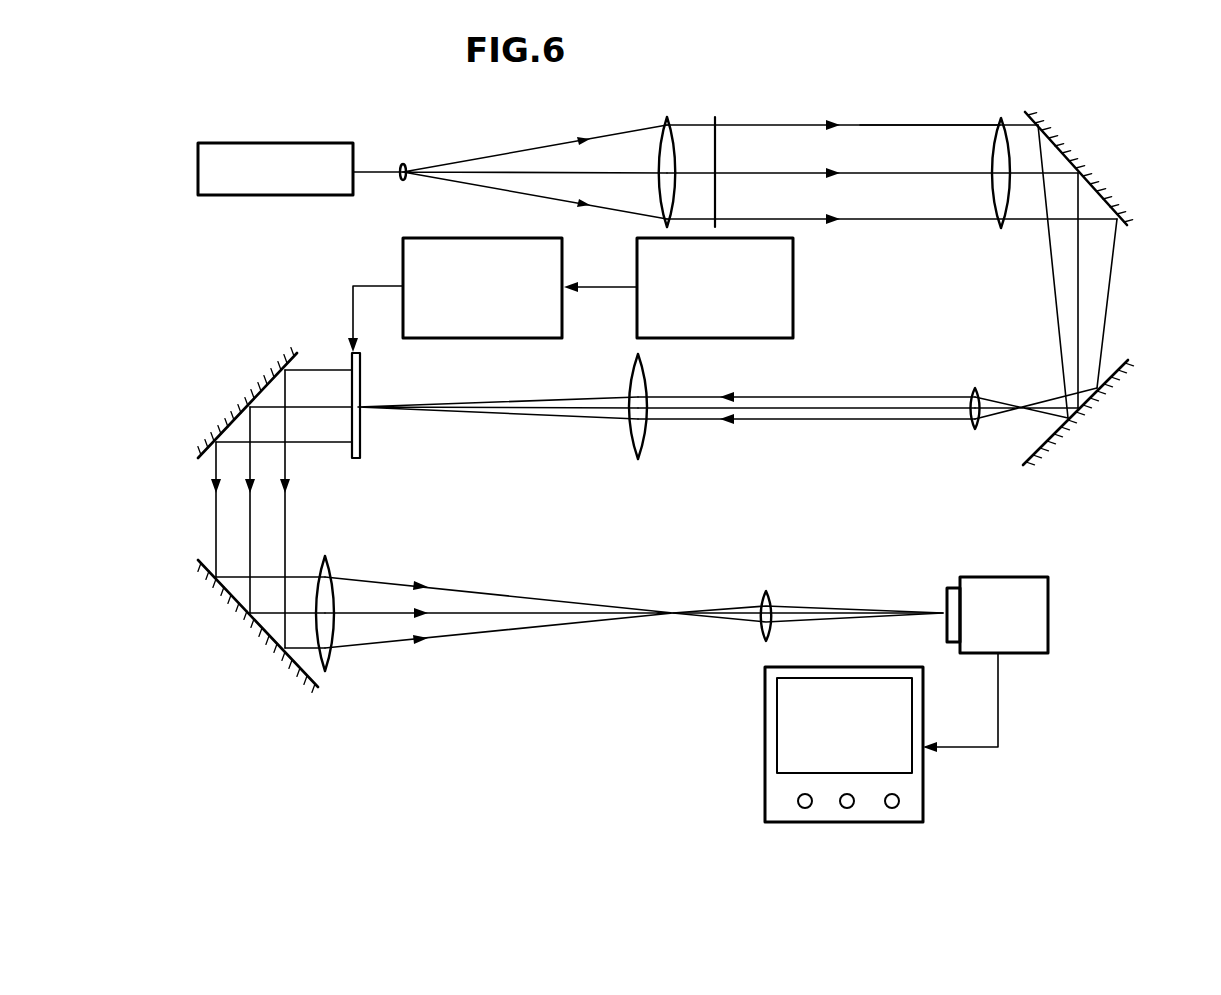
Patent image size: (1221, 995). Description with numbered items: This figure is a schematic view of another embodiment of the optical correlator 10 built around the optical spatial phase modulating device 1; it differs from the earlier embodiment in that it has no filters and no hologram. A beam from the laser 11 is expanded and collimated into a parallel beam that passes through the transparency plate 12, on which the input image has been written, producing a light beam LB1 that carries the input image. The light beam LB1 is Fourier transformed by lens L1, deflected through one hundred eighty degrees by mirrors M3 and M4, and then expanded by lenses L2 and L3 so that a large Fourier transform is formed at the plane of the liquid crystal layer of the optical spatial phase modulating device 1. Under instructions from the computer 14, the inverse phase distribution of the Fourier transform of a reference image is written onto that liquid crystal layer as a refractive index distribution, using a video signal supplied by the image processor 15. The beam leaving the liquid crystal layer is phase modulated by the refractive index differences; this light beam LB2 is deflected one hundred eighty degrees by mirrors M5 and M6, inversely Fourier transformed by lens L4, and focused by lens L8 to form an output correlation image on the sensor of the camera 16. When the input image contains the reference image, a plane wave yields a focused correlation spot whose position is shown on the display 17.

The optical spatial phase modulating device 1 is at (361, 371).
The optical correlator 10 is at (815, 108).
The laser 11 is at (248, 143).
The transparency plate 12 is at (716, 117).
The computer 14 is at (712, 338).
The image processor 15 is at (482, 338).
The camera 16 is at (1048, 628).
The display 17 is at (924, 767).
The light beam LB1 is at (930, 133).
The light beam LB2 is at (213, 512).
The lens L1 is at (1002, 191).
The lens L2 is at (980, 426).
The lens L3 is at (638, 425).
The lens L4 is at (333, 631).
The lens L8 is at (756, 629).
The mirror M3 is at (1092, 179).
The mirror M4 is at (1104, 386).
The mirror M5 is at (234, 410).
The mirror M6 is at (218, 588).